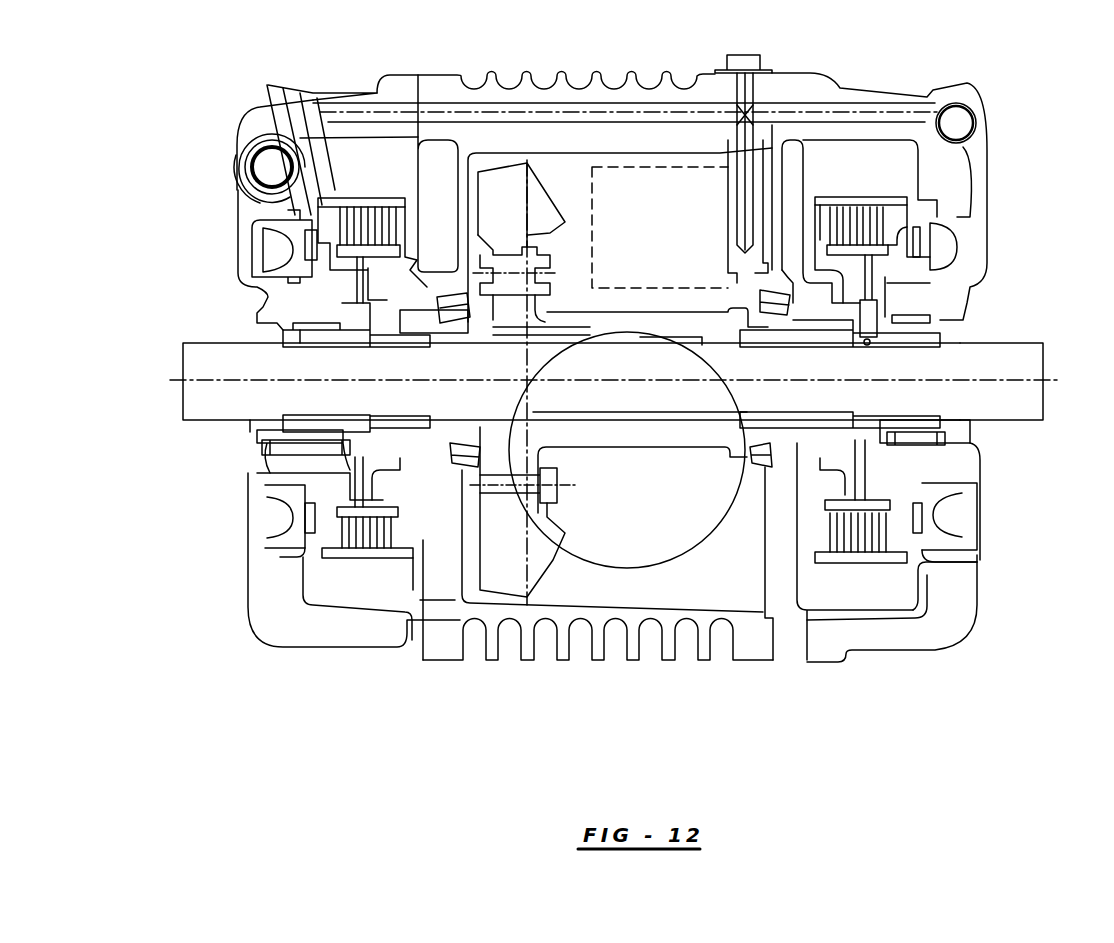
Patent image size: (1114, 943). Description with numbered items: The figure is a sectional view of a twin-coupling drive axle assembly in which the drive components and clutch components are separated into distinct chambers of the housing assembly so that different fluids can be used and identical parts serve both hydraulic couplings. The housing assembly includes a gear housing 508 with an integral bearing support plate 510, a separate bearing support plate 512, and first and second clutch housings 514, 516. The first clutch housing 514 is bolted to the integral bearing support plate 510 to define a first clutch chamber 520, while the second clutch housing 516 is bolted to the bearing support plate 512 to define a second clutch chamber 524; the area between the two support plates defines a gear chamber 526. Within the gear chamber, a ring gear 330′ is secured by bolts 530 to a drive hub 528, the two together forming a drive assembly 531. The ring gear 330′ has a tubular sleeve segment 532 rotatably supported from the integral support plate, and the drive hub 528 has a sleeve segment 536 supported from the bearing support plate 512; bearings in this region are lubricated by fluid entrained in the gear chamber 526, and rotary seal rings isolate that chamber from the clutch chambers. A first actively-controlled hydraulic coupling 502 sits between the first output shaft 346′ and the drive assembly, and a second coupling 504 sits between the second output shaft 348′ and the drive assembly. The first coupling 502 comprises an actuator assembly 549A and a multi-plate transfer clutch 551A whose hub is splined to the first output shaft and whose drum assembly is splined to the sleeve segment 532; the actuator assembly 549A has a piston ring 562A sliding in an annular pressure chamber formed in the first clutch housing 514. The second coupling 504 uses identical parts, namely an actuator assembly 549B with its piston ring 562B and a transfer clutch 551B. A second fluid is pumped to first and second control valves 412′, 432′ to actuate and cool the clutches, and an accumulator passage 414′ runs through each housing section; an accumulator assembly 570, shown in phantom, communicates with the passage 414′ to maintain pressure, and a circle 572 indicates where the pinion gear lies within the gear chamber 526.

The first actively-controlled hydraulic coupling 502 is at (335, 170).
The gear housing 508 is at (437, 83).
The accumulator passage 414′ is at (607, 105).
The second clutch chamber 524 is at (852, 157).
The second control valve 432′ is at (965, 125).
The first control valve 412′ is at (257, 173).
The ring gear 330′ is at (545, 208).
The bolts 530 is at (545, 262).
The drive hub 528 is at (545, 317).
The accumulator assembly 570 is at (683, 278).
The transfer clutch 551B is at (877, 268).
The first output shaft 346′ is at (210, 357).
The second output shaft 348′ is at (1012, 354).
The tubular sleeve segment 532 is at (500, 352).
The sleeve segment 536 is at (750, 337).
The drive assembly 531 is at (575, 465).
The transfer clutch 551A is at (350, 500).
The actuator assembly 549B is at (942, 482).
The piston ring 562A is at (278, 535).
The piston ring 562B is at (943, 535).
The actuator assembly 549A is at (285, 558).
The first clutch housing 514 is at (285, 625).
The first clutch chamber 520 is at (362, 587).
The integral bearing support plate 510 is at (442, 590).
The circle 572 is at (585, 562).
The gear chamber 526 is at (703, 573).
The bearing support plate 512 is at (792, 640).
The second actively-controlled hydraulic coupling 504 is at (863, 572).
The second clutch housing 516 is at (923, 628).